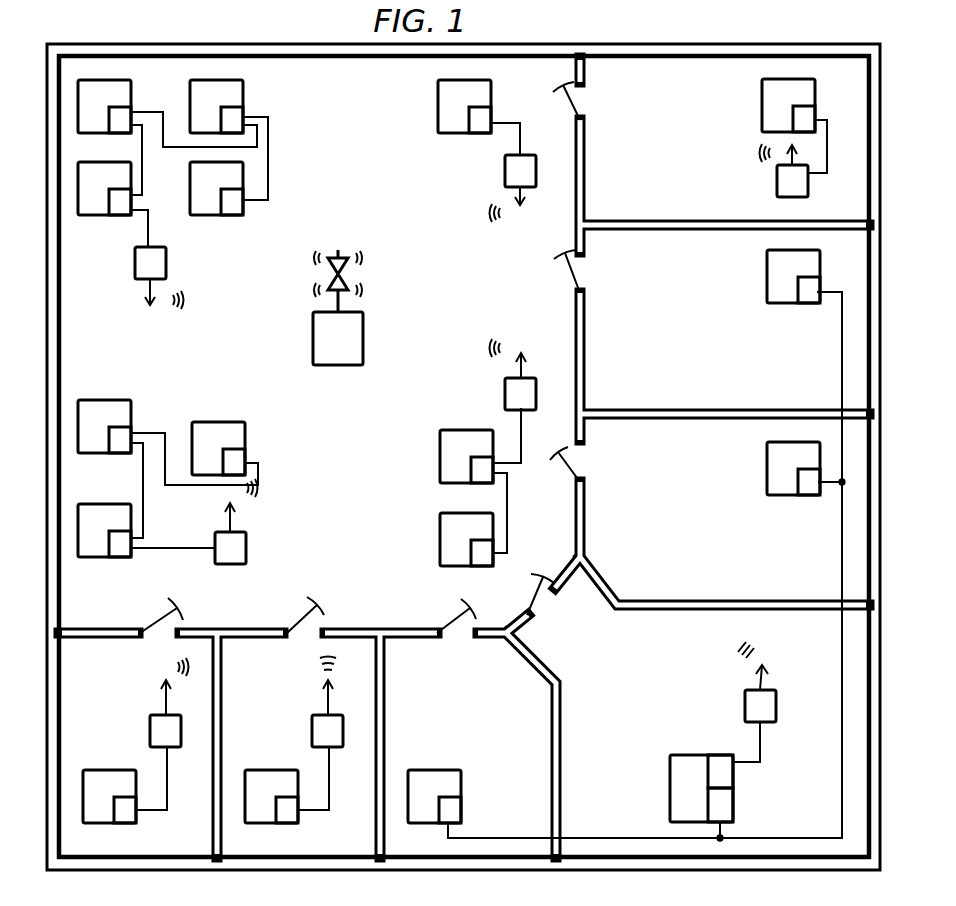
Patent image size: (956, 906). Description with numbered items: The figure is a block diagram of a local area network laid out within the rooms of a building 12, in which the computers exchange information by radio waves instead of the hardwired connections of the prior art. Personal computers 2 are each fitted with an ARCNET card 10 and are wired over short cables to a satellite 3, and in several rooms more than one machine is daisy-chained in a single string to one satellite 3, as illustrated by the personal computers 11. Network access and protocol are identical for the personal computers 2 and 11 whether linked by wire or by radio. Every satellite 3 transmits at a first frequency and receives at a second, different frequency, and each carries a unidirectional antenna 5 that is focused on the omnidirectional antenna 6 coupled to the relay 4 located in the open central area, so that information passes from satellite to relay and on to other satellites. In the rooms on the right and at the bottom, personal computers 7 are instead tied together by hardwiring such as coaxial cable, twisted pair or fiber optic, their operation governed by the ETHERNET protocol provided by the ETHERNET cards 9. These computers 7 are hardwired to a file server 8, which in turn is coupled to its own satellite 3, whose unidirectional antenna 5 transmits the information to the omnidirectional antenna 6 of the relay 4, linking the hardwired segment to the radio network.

The building 12 is at (690, 44).
The personal computer 2 is at (438, 97).
The personal computers 11 is at (112, 80).
The ARCNET card 10 is at (247, 110).
The satellite 3 is at (135, 273).
The unidirectional antenna 5 is at (155, 308).
The omnidirectional antenna 6 is at (338, 257).
The relay 4 is at (363, 355).
The personal computers 7 is at (767, 285).
The ETHERNET card 9 is at (805, 303).
The file server 8 is at (670, 797).